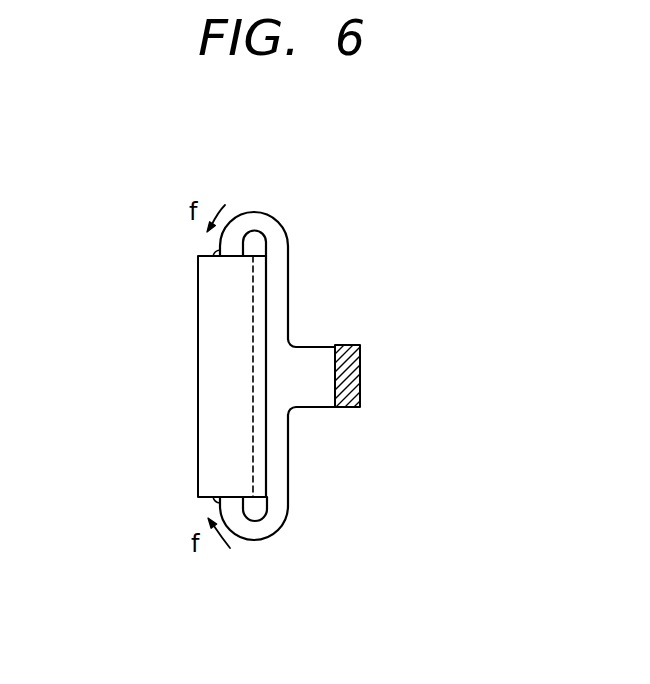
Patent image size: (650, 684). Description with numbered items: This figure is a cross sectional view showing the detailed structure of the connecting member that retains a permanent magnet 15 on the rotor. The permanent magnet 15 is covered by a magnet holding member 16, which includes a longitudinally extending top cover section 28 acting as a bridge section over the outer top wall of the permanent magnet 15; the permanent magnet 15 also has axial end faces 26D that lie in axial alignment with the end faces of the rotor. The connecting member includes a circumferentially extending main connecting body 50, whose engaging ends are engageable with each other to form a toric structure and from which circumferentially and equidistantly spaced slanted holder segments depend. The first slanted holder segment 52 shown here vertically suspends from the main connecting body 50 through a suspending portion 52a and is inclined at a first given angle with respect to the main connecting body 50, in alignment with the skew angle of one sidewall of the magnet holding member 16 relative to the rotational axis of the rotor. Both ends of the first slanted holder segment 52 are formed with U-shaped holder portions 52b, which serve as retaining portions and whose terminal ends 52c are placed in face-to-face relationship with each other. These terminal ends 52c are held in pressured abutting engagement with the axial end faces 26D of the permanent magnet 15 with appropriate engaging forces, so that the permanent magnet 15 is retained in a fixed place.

The permanent magnet 15 is at (197, 313).
The magnet holding member 16 is at (228, 407).
The axial end faces 26D is at (213, 255).
The top cover section 28 is at (260, 450).
The main connecting body 50 is at (345, 398).
The first slanted holder segment 52 is at (278, 293).
The suspending portion 52a is at (318, 358).
The U-shaped holder portions 52b is at (263, 220).
The terminal ends 52c is at (235, 242).